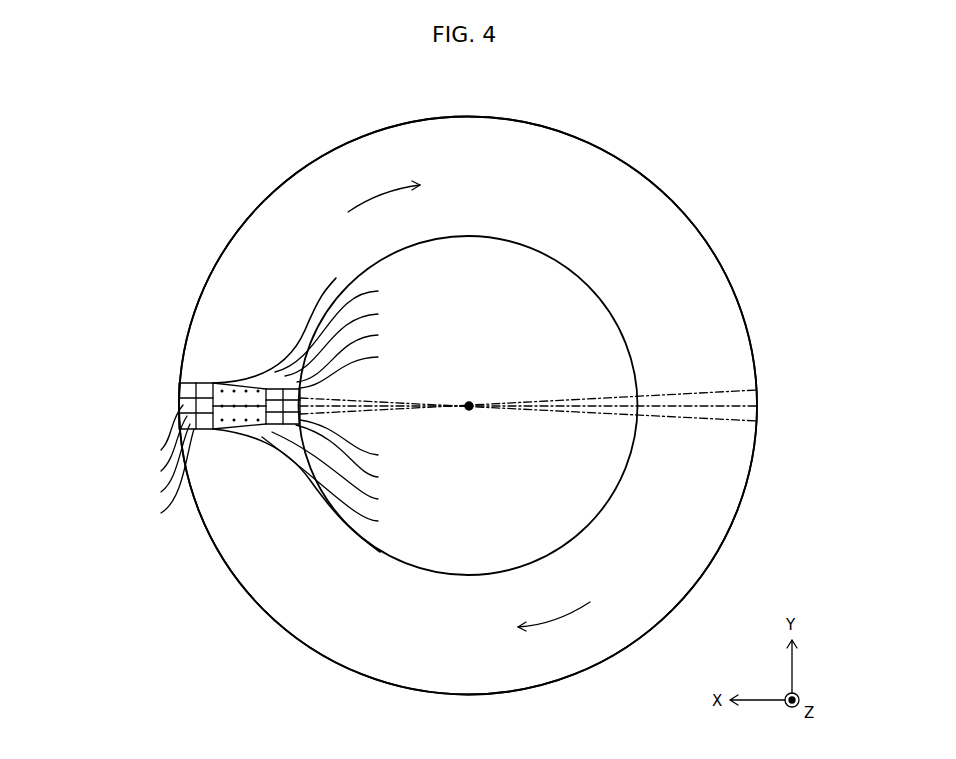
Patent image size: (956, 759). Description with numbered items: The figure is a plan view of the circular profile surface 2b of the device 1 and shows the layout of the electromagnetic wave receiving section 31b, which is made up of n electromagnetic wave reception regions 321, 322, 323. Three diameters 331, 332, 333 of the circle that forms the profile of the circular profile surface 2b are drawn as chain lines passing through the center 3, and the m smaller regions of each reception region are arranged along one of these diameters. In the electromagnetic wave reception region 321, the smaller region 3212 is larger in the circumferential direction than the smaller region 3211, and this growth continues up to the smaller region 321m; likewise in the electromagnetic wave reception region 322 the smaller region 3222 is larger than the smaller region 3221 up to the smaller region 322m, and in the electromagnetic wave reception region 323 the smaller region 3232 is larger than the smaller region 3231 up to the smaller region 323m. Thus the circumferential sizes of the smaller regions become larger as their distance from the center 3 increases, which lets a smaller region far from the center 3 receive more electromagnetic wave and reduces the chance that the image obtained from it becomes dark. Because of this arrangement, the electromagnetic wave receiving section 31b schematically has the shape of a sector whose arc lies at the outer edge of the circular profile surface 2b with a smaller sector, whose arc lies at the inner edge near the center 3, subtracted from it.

The mirror device 1 is at (735, 121).
The circular profile surface 2b is at (650, 184).
The center 3 is at (473, 403).
The electromagnetic wave receiving section 31b is at (156, 375).
The electromagnetic wave reception region 321 is at (111, 465).
The smaller region 321m is at (148, 433).
The smaller region 3212 is at (151, 463).
The smaller region 3211 is at (153, 476).
The electromagnetic wave reception region 322 is at (390, 332).
The smaller region 322m is at (349, 327).
The smaller region 3222 is at (357, 354).
The smaller region 3221 is at (359, 368).
The electromagnetic wave reception region 323 is at (384, 476).
The smaller region 3231 is at (359, 442).
The smaller region 3232 is at (357, 456).
The smaller region 323m is at (342, 484).
The diameter 331 is at (754, 404).
The diameter 332 is at (683, 418).
The diameter 333 is at (683, 393).